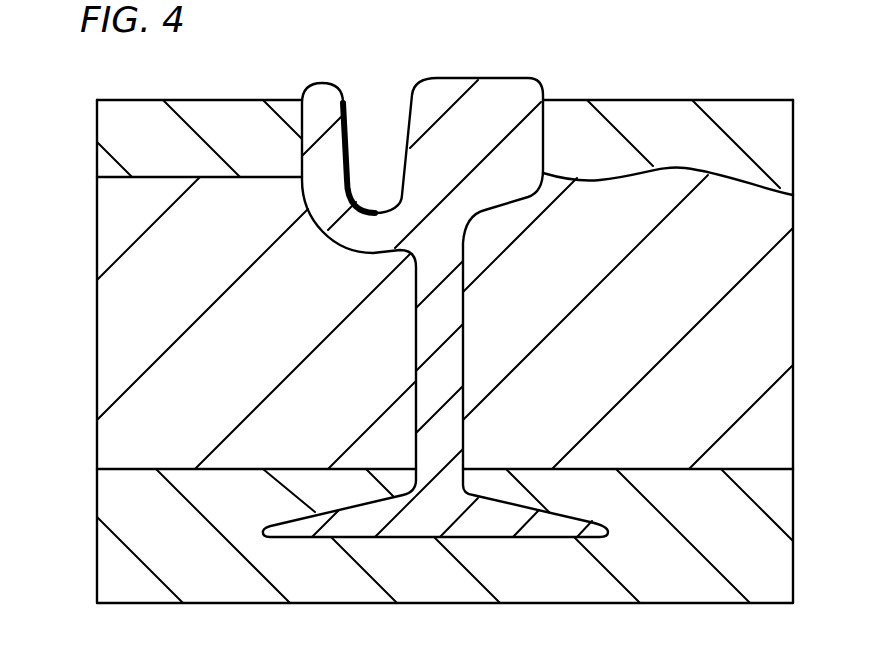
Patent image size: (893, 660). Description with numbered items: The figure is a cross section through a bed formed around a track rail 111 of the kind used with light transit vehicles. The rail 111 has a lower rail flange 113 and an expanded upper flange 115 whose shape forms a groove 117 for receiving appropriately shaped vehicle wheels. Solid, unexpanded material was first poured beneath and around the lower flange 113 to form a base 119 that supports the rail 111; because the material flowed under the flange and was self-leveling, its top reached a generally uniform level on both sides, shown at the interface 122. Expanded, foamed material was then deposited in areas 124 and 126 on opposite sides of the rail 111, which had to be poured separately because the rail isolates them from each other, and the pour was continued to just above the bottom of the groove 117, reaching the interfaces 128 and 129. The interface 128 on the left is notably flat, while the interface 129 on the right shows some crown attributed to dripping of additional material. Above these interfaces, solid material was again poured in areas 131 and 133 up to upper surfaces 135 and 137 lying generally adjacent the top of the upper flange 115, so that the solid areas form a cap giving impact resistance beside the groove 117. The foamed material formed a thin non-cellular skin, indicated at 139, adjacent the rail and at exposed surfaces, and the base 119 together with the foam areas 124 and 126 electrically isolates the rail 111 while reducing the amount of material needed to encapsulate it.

The track rail 111 is at (455, 302).
The lower rail flange 113 is at (443, 527).
The expanded upper flange 115 is at (337, 243).
The groove 117 is at (376, 207).
The base 119 is at (549, 577).
The interface between layers 122 is at (309, 468).
The area of expanded material 124 is at (278, 349).
The area of expanded material 126 is at (643, 350).
The interface 128 is at (254, 178).
The interface 129 is at (666, 172).
The area of solid material 131 is at (250, 139).
The area of solid material 133 is at (684, 141).
The upper surface 135 is at (258, 101).
The upper surface 137 is at (652, 100).
The bonding boundary lines 139 is at (141, 99).